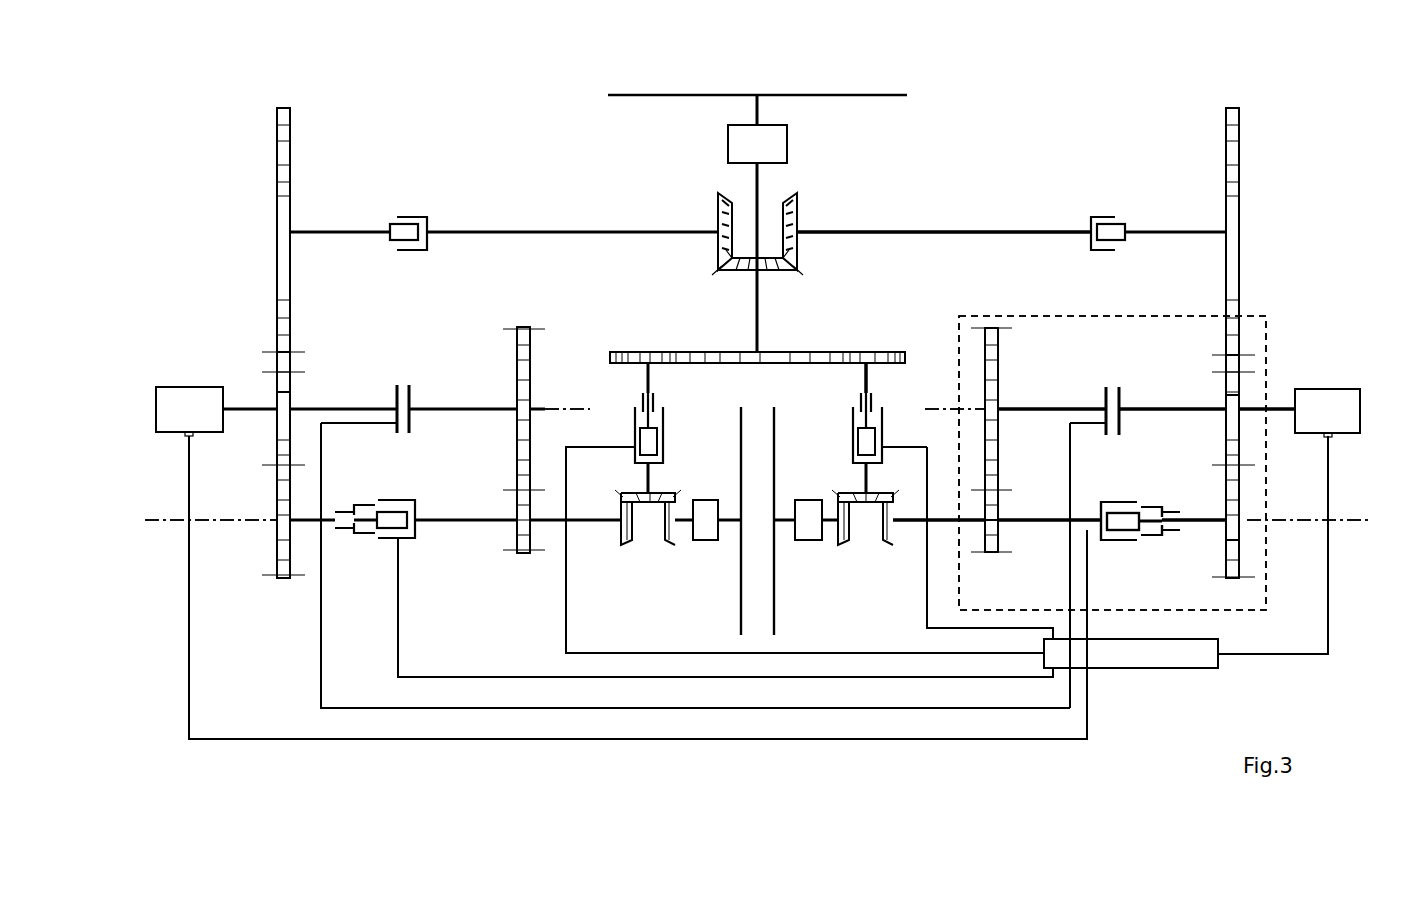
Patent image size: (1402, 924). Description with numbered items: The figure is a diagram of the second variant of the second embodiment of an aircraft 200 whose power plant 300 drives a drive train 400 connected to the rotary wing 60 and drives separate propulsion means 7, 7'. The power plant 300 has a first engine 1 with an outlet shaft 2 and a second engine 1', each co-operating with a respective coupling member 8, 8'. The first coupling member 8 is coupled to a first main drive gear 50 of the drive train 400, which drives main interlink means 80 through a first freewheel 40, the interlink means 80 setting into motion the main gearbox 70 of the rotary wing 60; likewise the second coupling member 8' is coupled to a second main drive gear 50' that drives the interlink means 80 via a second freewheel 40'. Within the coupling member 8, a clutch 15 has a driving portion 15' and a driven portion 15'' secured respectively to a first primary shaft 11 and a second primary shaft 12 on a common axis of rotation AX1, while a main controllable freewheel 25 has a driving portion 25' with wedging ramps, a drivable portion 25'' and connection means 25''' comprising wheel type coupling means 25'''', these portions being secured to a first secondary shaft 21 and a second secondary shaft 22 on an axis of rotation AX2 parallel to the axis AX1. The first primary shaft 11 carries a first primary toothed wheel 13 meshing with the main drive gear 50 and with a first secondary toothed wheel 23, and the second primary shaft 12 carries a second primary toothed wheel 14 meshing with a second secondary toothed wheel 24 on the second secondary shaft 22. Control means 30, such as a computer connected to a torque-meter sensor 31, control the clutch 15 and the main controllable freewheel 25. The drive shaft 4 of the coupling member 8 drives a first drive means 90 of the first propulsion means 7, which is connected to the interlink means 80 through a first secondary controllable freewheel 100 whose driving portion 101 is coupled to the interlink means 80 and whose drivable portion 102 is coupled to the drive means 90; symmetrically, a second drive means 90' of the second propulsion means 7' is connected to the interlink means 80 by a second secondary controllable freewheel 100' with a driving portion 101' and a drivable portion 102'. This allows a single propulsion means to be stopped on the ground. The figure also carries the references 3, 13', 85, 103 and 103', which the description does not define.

The engine 1 is at (1329, 395).
The second engine 1' is at (183, 386).
The outlet shaft 2 is at (1282, 414).
The reduction gear module 3 is at (1266, 585).
The drive shaft 4 is at (936, 520).
The propulsion means 7 is at (812, 521).
The second propulsion means 7' is at (703, 521).
The coupling member 8 is at (890, 388).
The second coupling member 8' is at (480, 518).
The first primary shaft 11 is at (1190, 408).
The second primary shaft 12 is at (1048, 408).
The first primary toothed wheel 13 is at (1263, 370).
The gear wheel 13' is at (247, 369).
The second primary toothed wheel 14 is at (998, 340).
The clutch 15 is at (1124, 380).
The driving portion 15' is at (745, 402).
The driven portion 15'' is at (1095, 565).
The first secondary shaft 21 is at (1190, 514).
The second secondary shaft 22 is at (1032, 514).
The first secondary toothed wheel 23 is at (1234, 591).
The second secondary toothed wheel 24 is at (994, 554).
The main controllable freewheel 25 is at (684, 587).
The driving portion 25' is at (1139, 546).
The drivable portion 25'' is at (1129, 496).
The connection means 25''' is at (1172, 490).
The wheel type coupling means 25'''' is at (1187, 563).
The control means 30 is at (1145, 665).
The sensor 31 is at (1332, 438).
The main freewheel 40 is at (1095, 190).
The second freewheel 40' is at (424, 190).
The main drive gear 50 is at (1272, 335).
The second main drive gear 50' is at (244, 334).
The rotary wing 60 is at (795, 95).
The main gearbox 70 is at (728, 140).
The main interlink means 80 is at (816, 196).
The crown gear wheel 85 is at (830, 372).
The first drive means 90 is at (867, 552).
The second drive means 90' is at (646, 552).
The first secondary controllable freewheel 100 is at (862, 340).
The second secondary controllable freewheel 100' is at (552, 430).
The driving portion 101 is at (896, 439).
The driving portion 101' is at (687, 439).
The drivable portion 102 is at (856, 435).
The drivable portion 102' is at (805, 530).
The clutch shaft 103 is at (830, 410).
The clutch shaft 103' is at (688, 410).
The aircraft 200 is at (1210, 72).
The power plant 300 is at (1332, 290).
The drive train 400 is at (893, 222).
The axis of rotation AX1 is at (922, 410).
The axis of rotation AX2 is at (1345, 520).